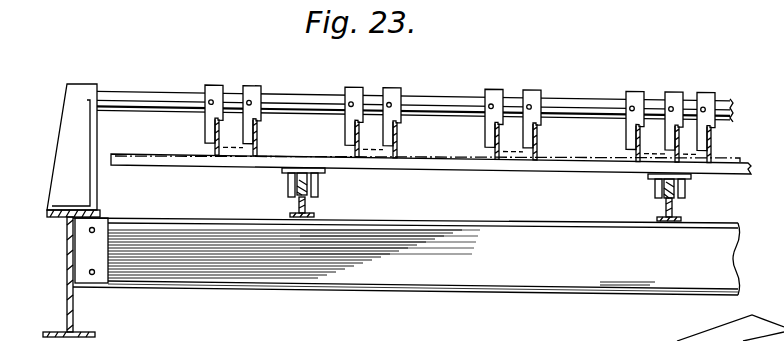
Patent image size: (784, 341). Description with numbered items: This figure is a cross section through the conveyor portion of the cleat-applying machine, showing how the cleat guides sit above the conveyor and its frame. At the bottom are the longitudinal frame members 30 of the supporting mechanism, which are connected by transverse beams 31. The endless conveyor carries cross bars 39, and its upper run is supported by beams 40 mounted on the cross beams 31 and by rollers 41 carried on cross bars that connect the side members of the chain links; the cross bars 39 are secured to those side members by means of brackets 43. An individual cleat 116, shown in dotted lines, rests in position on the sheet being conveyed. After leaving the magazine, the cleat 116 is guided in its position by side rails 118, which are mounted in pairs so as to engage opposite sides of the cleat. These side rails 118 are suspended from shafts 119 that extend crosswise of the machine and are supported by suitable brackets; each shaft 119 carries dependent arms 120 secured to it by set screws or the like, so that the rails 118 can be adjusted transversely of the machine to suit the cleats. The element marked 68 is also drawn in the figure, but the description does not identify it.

The longitudinal frame member 30 is at (73, 310).
The transverse beam 31 is at (250, 290).
The cross bar 39 is at (438, 165).
The beam 40 is at (307, 207).
The roller 41 is at (303, 183).
The bracket 43 is at (313, 171).
The trough strip 68 is at (573, 158).
The cleat 116 is at (521, 155).
The side rail 118 is at (495, 155).
The shaft 119 is at (587, 101).
The dependent arm 120 is at (483, 123).